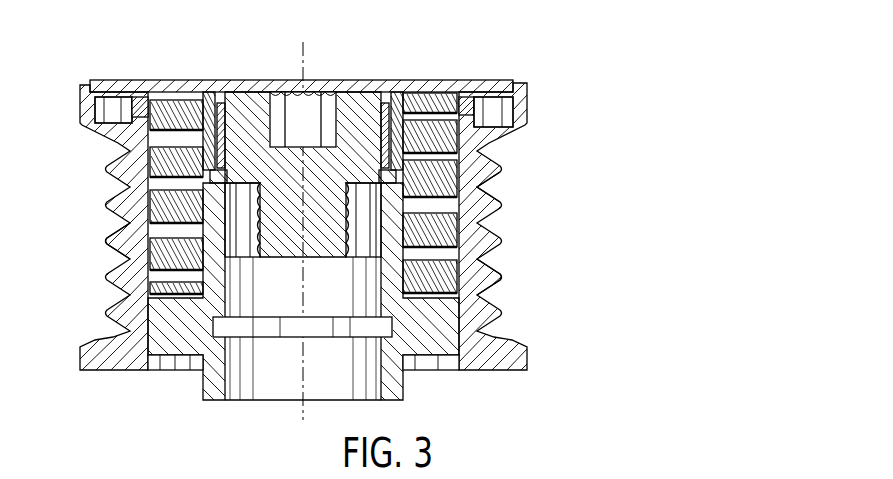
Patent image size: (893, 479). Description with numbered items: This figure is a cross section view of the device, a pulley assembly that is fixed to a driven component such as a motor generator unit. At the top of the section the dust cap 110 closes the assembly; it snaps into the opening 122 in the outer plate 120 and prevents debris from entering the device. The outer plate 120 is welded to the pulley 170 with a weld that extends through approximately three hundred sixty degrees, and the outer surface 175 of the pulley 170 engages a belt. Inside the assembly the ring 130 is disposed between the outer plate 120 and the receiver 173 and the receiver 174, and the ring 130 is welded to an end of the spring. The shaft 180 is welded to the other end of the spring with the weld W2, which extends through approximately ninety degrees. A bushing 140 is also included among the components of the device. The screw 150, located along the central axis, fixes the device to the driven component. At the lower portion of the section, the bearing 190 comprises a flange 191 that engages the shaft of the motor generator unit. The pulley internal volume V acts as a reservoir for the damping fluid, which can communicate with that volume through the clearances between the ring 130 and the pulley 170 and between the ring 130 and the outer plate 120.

The dust cap 110 is at (363, 80).
The outer plate 120 is at (493, 92).
The opening 122 is at (278, 68).
The ring 130 is at (133, 108).
The bushing 140 is at (455, 155).
The screw 150 is at (210, 80).
The pulley 170 is at (497, 275).
The receiver 173 is at (502, 108).
The receiver 174 is at (103, 107).
The outer surface 175 is at (108, 263).
The shaft 180 is at (435, 230).
The bearing 190 is at (402, 397).
The flange 191 is at (205, 397).
The pulley internal volume V is at (455, 185).
The weld W2 is at (205, 268).